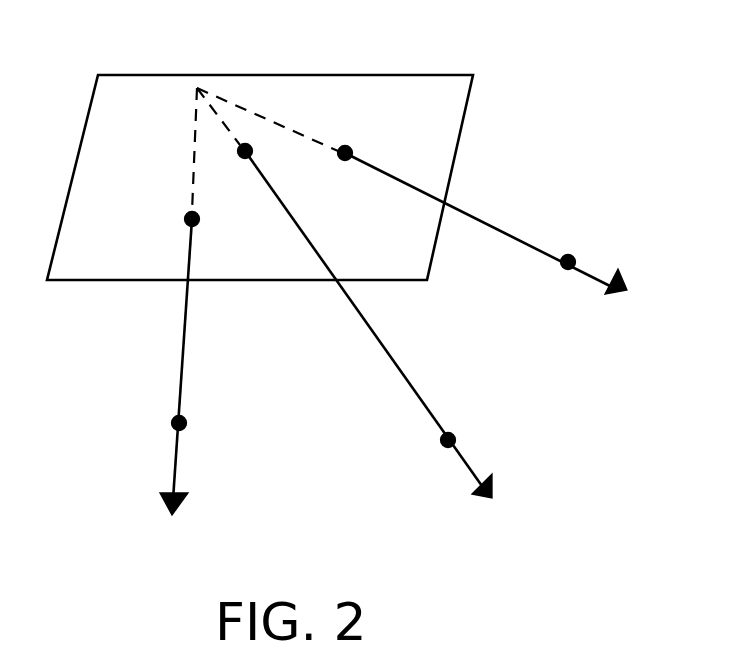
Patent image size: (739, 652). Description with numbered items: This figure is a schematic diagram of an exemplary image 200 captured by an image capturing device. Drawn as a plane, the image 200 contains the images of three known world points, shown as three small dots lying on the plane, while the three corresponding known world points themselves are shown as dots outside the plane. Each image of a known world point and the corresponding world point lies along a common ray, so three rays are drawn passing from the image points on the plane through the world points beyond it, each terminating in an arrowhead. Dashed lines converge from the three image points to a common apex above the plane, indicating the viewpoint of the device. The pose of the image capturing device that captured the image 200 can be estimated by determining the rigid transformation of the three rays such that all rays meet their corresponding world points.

The image 200 is at (348, 77).